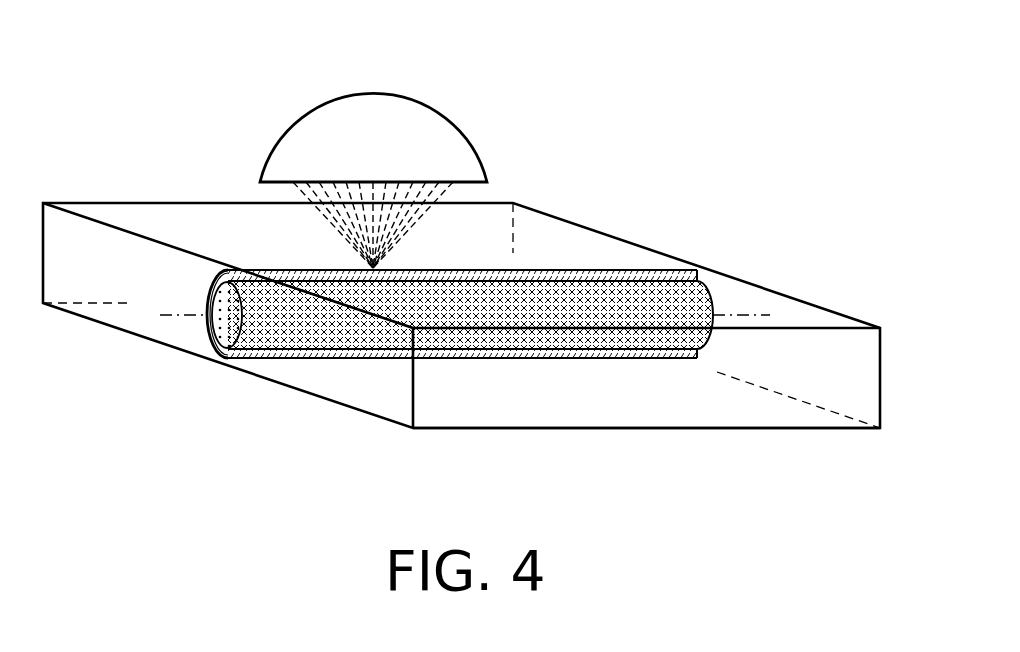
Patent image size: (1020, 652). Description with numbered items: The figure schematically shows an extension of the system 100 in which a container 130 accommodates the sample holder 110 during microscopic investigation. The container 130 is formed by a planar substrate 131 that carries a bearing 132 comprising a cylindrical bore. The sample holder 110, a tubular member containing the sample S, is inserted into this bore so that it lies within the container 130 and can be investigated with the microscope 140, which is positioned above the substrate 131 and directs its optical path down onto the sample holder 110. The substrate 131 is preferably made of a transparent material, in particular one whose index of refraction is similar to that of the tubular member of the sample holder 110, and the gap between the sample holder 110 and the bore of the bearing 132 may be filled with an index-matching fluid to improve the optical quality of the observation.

The system 100 is at (757, 136).
The sample holder 110 is at (615, 264).
The container 130 is at (112, 195).
The planar substrate 131 is at (378, 395).
The bearing 132 is at (207, 360).
The microscope 140 is at (279, 108).
The sample S is at (577, 342).